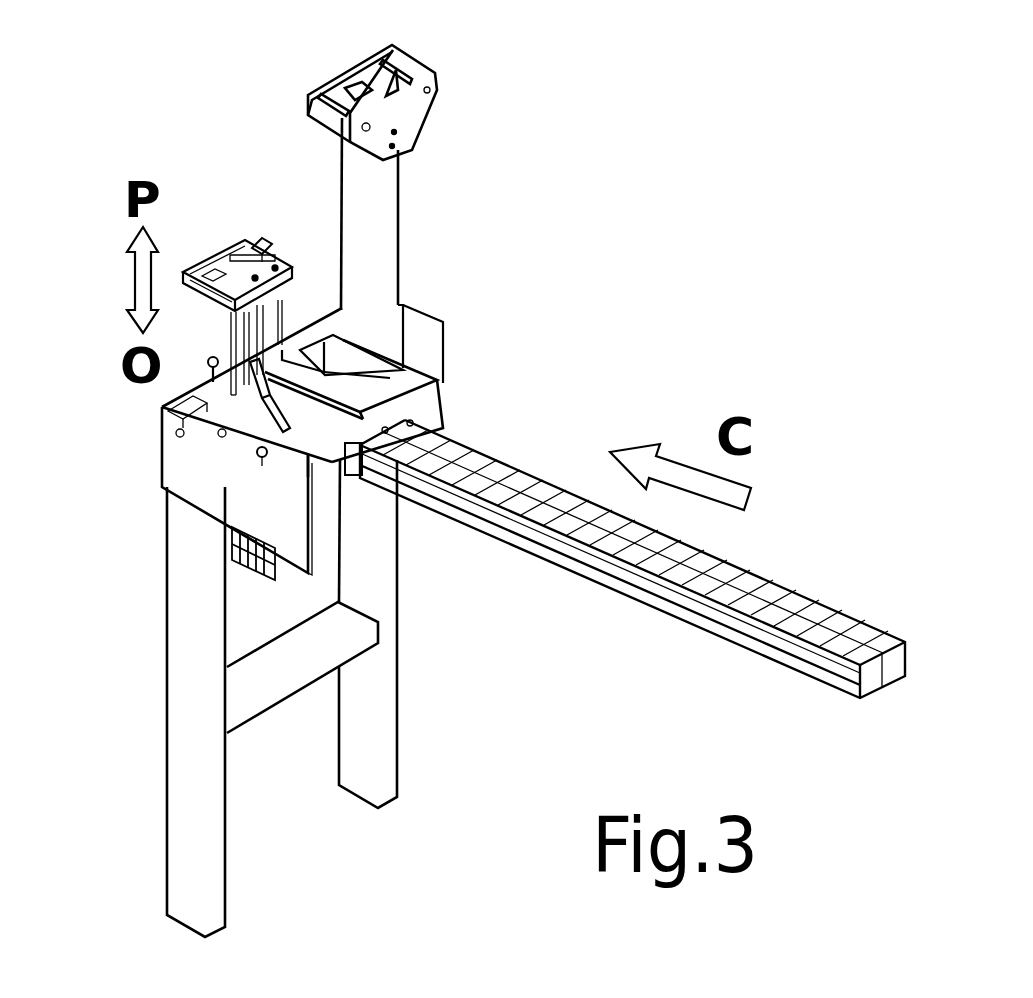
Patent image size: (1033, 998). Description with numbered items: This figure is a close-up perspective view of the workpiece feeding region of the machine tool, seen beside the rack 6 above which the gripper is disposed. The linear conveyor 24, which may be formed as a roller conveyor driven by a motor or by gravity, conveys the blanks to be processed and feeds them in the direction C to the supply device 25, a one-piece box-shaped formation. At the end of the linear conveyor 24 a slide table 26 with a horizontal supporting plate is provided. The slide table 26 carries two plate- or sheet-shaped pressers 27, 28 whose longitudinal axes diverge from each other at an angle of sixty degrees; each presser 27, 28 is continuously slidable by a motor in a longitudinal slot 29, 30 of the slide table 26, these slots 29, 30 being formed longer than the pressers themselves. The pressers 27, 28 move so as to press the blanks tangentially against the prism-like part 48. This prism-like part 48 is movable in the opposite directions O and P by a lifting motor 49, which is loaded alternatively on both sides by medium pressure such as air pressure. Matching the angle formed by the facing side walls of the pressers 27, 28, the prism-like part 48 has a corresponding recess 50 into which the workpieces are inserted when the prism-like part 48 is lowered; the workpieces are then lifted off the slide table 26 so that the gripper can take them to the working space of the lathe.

The rack 6 is at (198, 887).
The linear conveyor 24 is at (770, 580).
The supply device 25 is at (310, 462).
The slide table 26 is at (357, 399).
The presser 27 is at (268, 382).
The presser 28 is at (403, 325).
The longitudinal slot 29 is at (262, 452).
The longitudinal slot 30 is at (368, 373).
The prism-like part 48 is at (277, 262).
The lifting motor 49 is at (270, 553).
The recess 50 is at (242, 268).